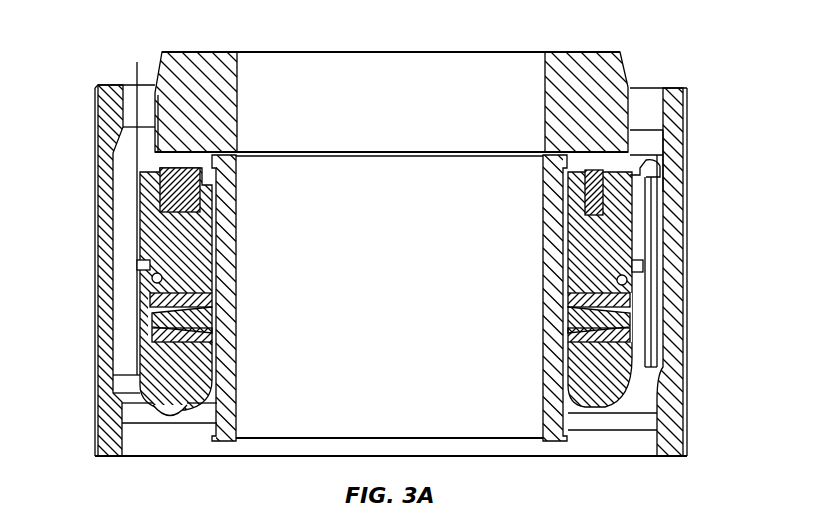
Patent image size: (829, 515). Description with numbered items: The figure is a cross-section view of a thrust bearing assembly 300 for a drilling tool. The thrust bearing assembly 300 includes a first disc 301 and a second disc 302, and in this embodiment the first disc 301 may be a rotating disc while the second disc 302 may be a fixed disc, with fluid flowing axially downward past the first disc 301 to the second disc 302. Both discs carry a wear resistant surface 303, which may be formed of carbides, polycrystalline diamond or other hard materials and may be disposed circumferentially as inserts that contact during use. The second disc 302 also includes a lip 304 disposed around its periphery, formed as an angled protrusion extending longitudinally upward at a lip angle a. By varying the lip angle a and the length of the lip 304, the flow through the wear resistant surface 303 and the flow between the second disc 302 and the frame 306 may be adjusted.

The thrust bearing assembly 300 is at (554, 31).
The first disc 301 is at (648, 113).
The second disc 302 is at (640, 237).
The wear resistant surface 303 is at (160, 173).
The lip 304 is at (640, 181).
The frame 306 is at (100, 243).
The lip angle a is at (665, 168).